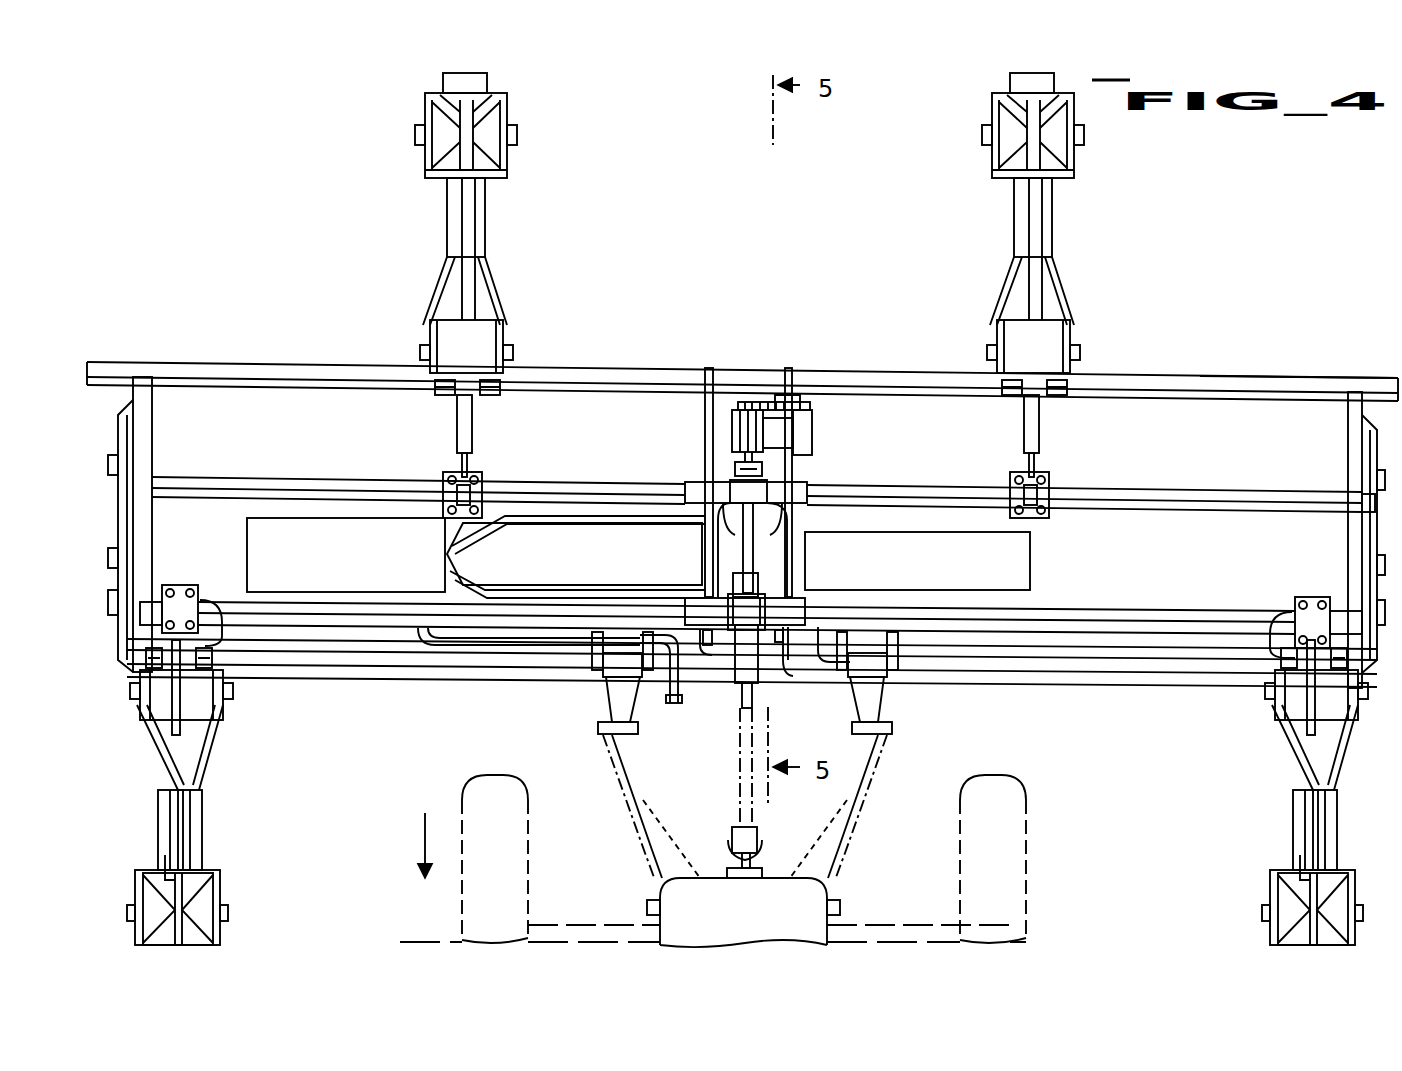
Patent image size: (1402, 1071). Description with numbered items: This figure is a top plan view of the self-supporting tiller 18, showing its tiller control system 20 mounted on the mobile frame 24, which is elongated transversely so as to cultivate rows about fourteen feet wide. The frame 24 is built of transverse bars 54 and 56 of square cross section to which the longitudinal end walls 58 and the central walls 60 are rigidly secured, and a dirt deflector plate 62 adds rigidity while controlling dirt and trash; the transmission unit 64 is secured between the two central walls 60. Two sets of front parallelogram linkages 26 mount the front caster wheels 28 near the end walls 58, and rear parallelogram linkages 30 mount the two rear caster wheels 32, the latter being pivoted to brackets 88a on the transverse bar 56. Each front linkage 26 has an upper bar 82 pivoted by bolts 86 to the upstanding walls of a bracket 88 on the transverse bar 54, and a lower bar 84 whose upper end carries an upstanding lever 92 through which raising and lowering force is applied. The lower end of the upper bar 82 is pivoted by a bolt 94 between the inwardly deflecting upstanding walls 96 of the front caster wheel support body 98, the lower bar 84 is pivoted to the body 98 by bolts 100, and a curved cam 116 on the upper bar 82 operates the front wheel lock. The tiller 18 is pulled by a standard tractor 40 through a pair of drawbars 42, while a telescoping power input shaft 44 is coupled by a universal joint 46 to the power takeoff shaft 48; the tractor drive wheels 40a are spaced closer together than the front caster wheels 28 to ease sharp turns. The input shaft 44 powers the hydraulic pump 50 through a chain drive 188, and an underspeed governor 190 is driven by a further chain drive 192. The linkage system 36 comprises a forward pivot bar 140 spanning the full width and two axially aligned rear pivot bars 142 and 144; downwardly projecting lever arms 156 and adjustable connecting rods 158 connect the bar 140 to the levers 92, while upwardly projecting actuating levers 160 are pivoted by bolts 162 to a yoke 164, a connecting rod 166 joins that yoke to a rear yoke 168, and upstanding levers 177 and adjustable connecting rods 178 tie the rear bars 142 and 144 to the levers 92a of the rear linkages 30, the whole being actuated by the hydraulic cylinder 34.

The self-supporting tiller 18 is at (193, 350).
The tiller control system 20 is at (732, 688).
The mobile frame 24 is at (282, 364).
The front parallelogram linkages 26 is at (190, 832).
The front caster wheels 28 is at (205, 853).
The rear parallelogram linkages 30 is at (452, 206).
The rear caster wheels 32 is at (455, 76).
The hydraulic cylinder 34 is at (758, 684).
The linkage system 36 is at (688, 476).
The tractor 40 is at (830, 888).
The drive wheels 40a is at (462, 792).
The drawbars 42 is at (610, 780).
The power input shaft 44 is at (738, 786).
The universal joint 46 is at (732, 836).
The power takeoff shaft 48 is at (758, 848).
The hydraulic pump 50 is at (812, 440).
The transverse bar 54 is at (1170, 684).
The transverse bar 56 is at (1241, 375).
The end walls 58 is at (150, 432).
The central walls 60 is at (790, 368).
The dirt deflector plate 62 is at (1168, 565).
The transmission unit 64 is at (738, 406).
The upper bar 82 is at (178, 818).
The lower bar 84 is at (168, 838).
The bolts 86 is at (140, 692).
The bracket 88 is at (190, 702).
The brackets 88a is at (505, 370).
The lever 92 is at (205, 745).
The levers 92a is at (482, 335).
The bolt 94 is at (195, 910).
The upstanding walls 96 is at (215, 925).
The front caster wheel support body 98 is at (215, 940).
The bolts 100 is at (132, 920).
The curved cam 116 is at (170, 876).
The forward pivot bar 140 is at (1163, 612).
The rear pivot bar 142 is at (537, 482).
The rear pivot bar 144 is at (1182, 492).
The lever arms 156 is at (182, 588).
The adjustable connecting rods 158 is at (213, 606).
The actuating levers 160 is at (795, 676).
The bolts 162 is at (808, 620).
The yoke 164 is at (792, 604).
The connecting rod 166 is at (744, 554).
The yoke 168 is at (690, 494).
The upstanding levers 177 is at (458, 474).
The adjustable connecting rods 178 is at (456, 430).
The chain drive 188 is at (742, 468).
The underspeed governor 190 is at (812, 414).
The chain drive 192 is at (802, 408).